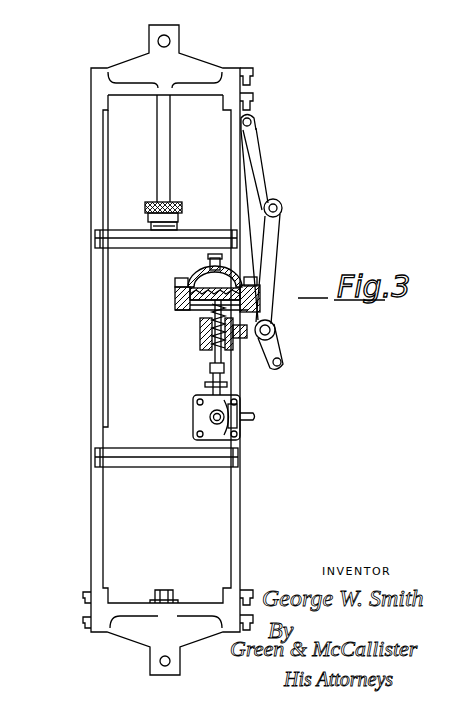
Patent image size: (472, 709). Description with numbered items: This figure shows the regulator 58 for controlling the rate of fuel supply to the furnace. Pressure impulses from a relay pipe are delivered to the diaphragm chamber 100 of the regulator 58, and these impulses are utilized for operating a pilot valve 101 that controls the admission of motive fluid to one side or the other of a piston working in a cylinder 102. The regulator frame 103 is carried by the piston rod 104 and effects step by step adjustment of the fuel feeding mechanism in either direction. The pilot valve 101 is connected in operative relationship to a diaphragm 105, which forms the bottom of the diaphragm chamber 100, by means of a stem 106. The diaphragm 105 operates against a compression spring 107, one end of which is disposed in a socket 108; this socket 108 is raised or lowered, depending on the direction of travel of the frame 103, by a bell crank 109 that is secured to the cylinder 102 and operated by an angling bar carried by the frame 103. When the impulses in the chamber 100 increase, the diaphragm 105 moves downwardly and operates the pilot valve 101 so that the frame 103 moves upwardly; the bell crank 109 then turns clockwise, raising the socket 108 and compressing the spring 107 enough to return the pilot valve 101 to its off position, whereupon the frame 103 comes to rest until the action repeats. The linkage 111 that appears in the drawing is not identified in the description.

The regulator 58 is at (70, 341).
The diaphragm chamber 100 is at (197, 272).
The pilot valve 101 is at (241, 405).
The cylinder 102 is at (153, 381).
The frame 103 is at (91, 199).
The piston rod 104 is at (166, 156).
The diaphragm 105 is at (175, 300).
The stem 106 is at (214, 350).
The compression spring 107 is at (207, 312).
The socket 108 is at (200, 333).
The bell crank 109 is at (251, 337).
The link arm 111 is at (258, 168).